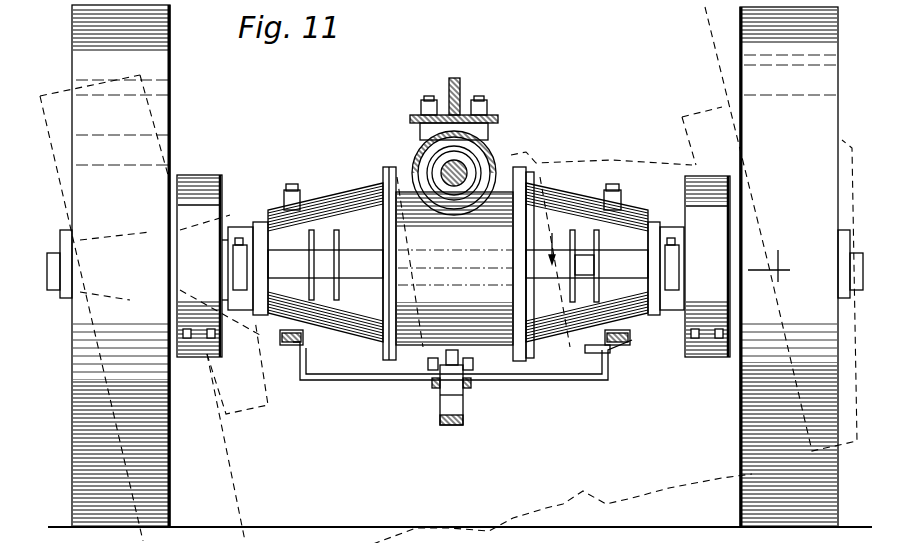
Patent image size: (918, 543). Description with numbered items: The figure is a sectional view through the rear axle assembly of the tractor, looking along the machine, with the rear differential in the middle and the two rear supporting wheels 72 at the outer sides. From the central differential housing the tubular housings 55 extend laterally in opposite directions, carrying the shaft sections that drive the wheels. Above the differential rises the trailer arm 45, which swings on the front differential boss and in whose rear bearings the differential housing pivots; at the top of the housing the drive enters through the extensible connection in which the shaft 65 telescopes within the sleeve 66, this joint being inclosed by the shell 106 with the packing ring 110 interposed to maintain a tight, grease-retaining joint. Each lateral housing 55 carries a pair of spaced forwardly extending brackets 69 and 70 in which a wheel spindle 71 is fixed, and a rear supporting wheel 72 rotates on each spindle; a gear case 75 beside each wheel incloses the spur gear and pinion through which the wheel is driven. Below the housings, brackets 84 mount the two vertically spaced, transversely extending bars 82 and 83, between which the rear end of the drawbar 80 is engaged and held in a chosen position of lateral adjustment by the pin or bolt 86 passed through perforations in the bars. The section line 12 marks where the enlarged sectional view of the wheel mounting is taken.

The section line 12— 12 is at (673, 257).
The trailer arm 45 is at (446, 85).
The tubular housing 55 is at (458, 264).
The shaft 65 is at (470, 160).
The sleeve 66 is at (490, 166).
The bracket 69 is at (583, 245).
The bracket 70 is at (246, 312).
The wheel spindle 71 is at (263, 245).
The rear supporting wheel 72 is at (172, 110).
The gear case 75 is at (200, 190).
The drawbar 80 is at (466, 405).
The transversely extending bar 82 is at (578, 380).
The transversely extending bar 83 is at (604, 352).
The bracket 84 is at (292, 345).
The pin or bolt 86 is at (436, 362).
The shell 106 is at (452, 200).
The packing ring 110 is at (500, 176).